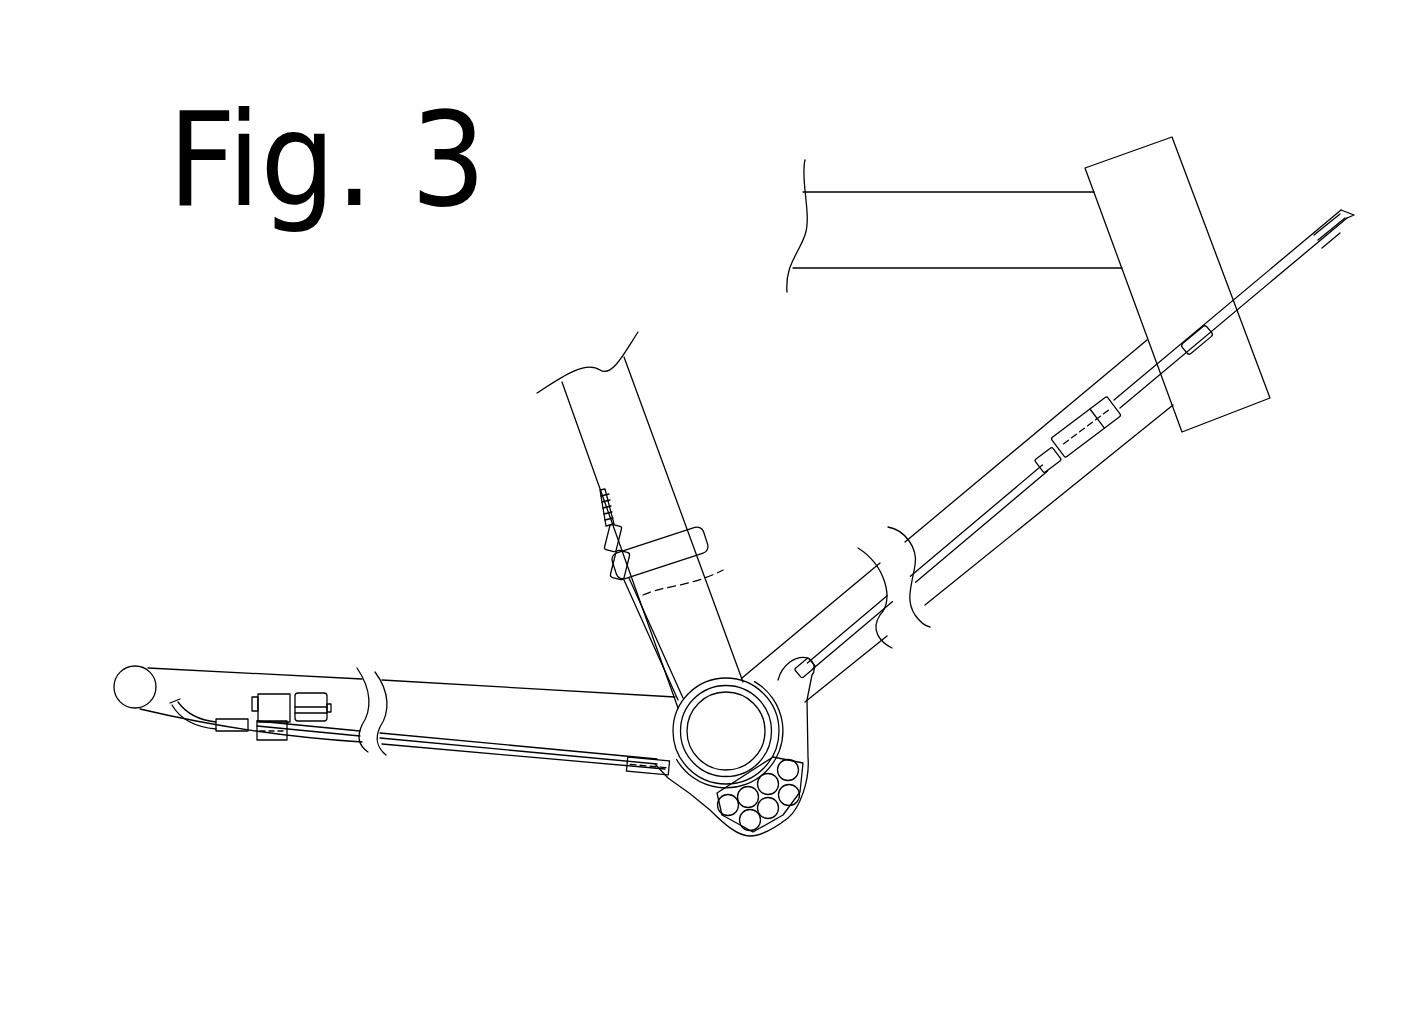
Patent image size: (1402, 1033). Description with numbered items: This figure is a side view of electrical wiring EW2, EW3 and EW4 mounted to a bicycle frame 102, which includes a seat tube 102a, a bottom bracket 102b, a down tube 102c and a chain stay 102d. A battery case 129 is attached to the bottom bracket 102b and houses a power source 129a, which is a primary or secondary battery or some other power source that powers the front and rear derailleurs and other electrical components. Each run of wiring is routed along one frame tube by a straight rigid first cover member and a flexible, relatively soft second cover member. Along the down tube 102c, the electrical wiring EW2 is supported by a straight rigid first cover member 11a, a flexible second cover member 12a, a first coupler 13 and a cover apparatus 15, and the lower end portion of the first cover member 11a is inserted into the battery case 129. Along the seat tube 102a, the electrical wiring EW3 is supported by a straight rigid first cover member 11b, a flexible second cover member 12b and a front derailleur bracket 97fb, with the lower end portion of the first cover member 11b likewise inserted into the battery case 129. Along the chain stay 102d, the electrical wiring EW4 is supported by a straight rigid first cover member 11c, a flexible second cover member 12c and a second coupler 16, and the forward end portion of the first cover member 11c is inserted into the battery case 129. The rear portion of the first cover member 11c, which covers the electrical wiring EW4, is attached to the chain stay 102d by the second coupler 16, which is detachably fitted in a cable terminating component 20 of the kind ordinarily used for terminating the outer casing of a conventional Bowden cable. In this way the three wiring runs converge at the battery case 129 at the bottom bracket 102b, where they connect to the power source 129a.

The frame 102 is at (657, 398).
The seat tube 102a is at (650, 455).
The bottom bracket 102b is at (733, 672).
The down tube 102c is at (950, 527).
The chain stay 102d is at (480, 693).
The front derailleur bracket 97fb is at (702, 533).
The electrical wiring EW2 is at (1323, 250).
The electrical wiring EW3 is at (708, 564).
The electrical wiring EW4 is at (310, 740).
The second cover member 12a is at (1273, 280).
The second cover member 12b is at (610, 537).
The second cover member 12c is at (232, 732).
The first cover member 11a is at (1147, 383).
The first cover member 11b is at (647, 640).
The first cover member 11c is at (547, 757).
The first coupler 13 is at (1055, 422).
The cover apparatus 15 is at (1073, 420).
The second coupler 16 is at (272, 697).
The cable terminating component 20 is at (307, 697).
The battery case 129 is at (800, 743).
The power source 129a is at (808, 780).